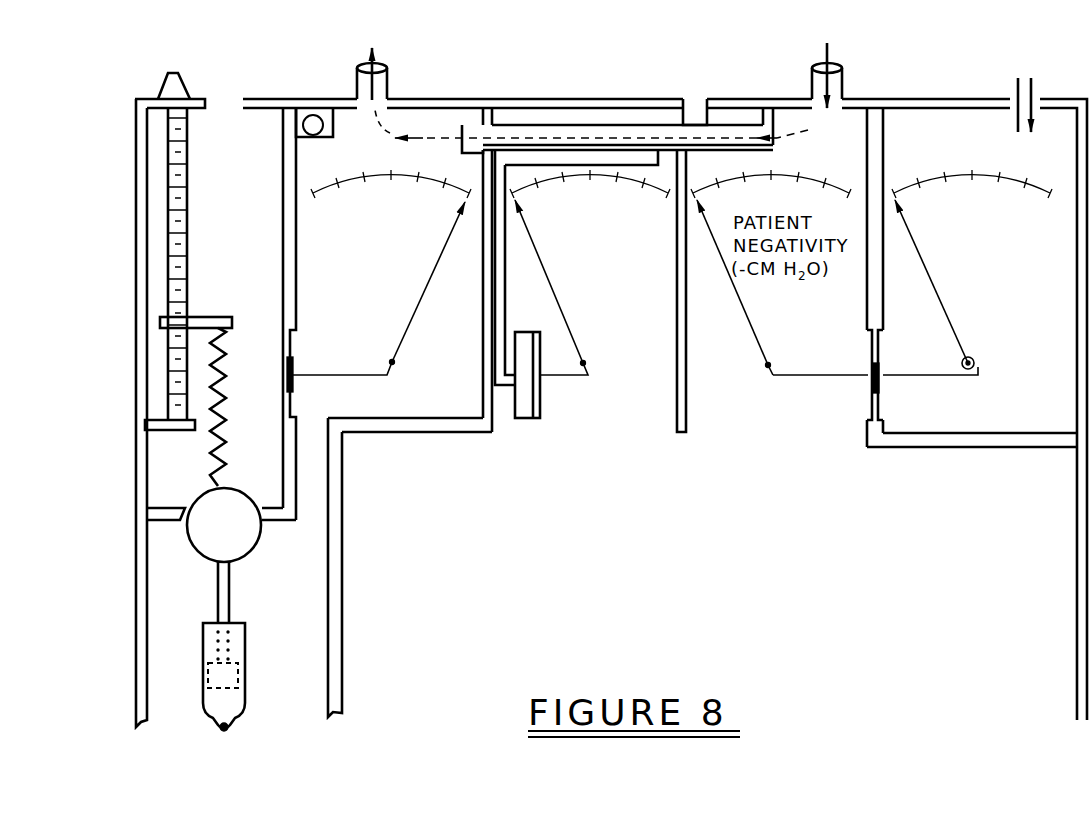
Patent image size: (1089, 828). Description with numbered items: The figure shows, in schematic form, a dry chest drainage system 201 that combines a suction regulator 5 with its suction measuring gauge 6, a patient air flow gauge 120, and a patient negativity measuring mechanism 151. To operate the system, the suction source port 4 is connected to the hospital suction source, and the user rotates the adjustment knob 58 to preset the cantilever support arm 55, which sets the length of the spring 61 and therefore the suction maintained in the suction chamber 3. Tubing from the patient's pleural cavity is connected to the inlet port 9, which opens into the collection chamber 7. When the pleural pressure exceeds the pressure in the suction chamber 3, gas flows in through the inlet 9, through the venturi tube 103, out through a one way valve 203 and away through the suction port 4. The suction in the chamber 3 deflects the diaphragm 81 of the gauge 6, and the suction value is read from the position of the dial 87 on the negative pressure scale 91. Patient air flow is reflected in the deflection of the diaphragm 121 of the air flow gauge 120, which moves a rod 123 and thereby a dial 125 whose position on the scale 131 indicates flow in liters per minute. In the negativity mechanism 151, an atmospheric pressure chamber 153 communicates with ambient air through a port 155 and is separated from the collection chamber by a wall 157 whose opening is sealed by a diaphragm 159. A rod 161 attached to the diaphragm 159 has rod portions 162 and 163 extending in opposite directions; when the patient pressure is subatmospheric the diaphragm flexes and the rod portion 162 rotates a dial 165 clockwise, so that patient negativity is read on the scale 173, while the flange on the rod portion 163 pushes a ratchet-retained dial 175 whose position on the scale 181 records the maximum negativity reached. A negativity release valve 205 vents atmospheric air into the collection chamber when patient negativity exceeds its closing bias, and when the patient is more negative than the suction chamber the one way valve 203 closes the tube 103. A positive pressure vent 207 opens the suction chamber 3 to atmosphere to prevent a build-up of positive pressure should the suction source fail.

The suction chamber 3 is at (370, 309).
The suction source port 4 is at (390, 82).
The suction regulator 5 is at (223, 110).
The negative pressure gauge 6 is at (410, 350).
The collection chamber 7 is at (684, 532).
The inlet port 9 is at (845, 83).
The cantilever support arm 55 is at (218, 317).
The adjustment knob 58 is at (168, 76).
The spring 61 is at (223, 388).
The diaphragm 81 is at (290, 348).
The dial 87 is at (413, 323).
The negative pressure scale 91 is at (372, 177).
The venturi tube 103 is at (562, 125).
The patient air flow gauge 120 is at (582, 315).
The diaphragm 121 is at (540, 407).
The rod 123 is at (540, 380).
The dial 125 is at (547, 285).
The scale 131 is at (568, 178).
The patient negativity measuring mechanism 151 is at (845, 388).
The atmospheric pressure chamber 153 is at (1040, 422).
The port 155 is at (1012, 100).
The wall 157 is at (985, 447).
The diaphragm 159 is at (880, 408).
The rod 161 is at (845, 372).
The rod portion 162 is at (817, 377).
The rod portion 163 is at (918, 375).
The dial 165 is at (740, 303).
The scale 173 is at (785, 175).
The dial 175 is at (957, 332).
The scale 181 is at (928, 170).
The chest drainage system 201 is at (385, 472).
The one way valve 203 is at (472, 128).
The negativity release valve 205 is at (692, 120).
The positive pressure vent 207 is at (309, 110).